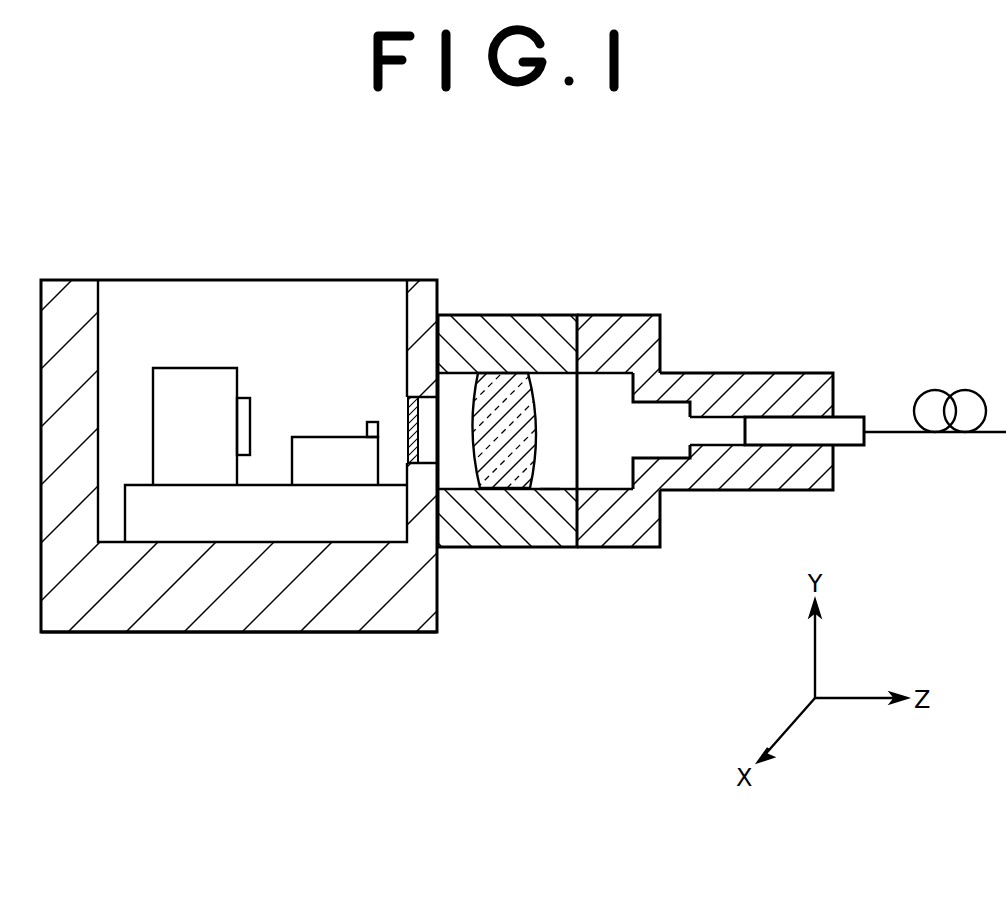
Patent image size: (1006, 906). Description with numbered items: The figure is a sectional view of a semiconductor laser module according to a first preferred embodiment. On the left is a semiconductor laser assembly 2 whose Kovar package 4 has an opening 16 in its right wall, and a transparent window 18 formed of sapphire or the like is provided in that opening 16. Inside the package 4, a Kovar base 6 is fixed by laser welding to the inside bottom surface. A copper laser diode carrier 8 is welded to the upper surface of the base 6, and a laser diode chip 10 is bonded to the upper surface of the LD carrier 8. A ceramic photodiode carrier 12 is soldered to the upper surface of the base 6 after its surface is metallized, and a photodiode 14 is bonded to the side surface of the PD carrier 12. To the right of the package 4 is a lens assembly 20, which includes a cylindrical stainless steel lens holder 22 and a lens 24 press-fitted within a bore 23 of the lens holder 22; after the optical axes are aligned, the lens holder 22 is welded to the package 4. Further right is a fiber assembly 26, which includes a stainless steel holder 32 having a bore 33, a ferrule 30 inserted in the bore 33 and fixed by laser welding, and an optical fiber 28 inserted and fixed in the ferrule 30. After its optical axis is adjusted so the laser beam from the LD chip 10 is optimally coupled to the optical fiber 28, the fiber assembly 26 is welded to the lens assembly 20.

The semiconductor laser assembly 2 is at (122, 644).
The package 4 is at (283, 622).
The base 6 is at (212, 535).
The laser diode carrier 8 is at (318, 447).
The laser diode chip 10 is at (372, 425).
The photodiode carrier 12 is at (194, 378).
The photodiode 14 is at (250, 412).
The opening 16 is at (424, 456).
The transparent window 18 is at (418, 412).
The lens assembly 20 is at (506, 306).
The lens holder 22 is at (523, 548).
The bore 23 is at (551, 485).
The lens 24 is at (516, 380).
The fiber assembly 26 is at (700, 372).
The optical fiber 28 is at (955, 389).
The ferrule 30 is at (843, 425).
The holder 32 is at (625, 548).
The bore 33 is at (728, 442).